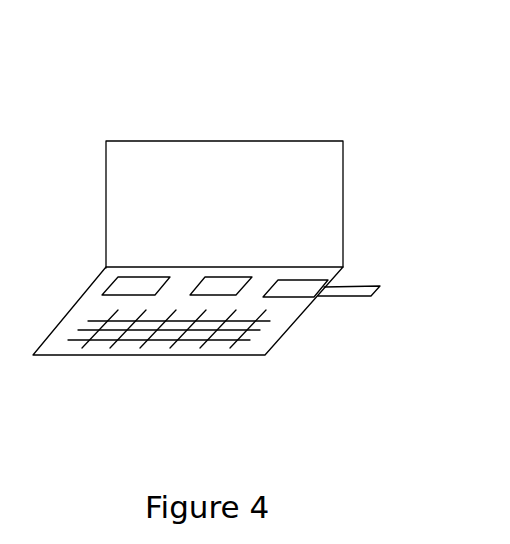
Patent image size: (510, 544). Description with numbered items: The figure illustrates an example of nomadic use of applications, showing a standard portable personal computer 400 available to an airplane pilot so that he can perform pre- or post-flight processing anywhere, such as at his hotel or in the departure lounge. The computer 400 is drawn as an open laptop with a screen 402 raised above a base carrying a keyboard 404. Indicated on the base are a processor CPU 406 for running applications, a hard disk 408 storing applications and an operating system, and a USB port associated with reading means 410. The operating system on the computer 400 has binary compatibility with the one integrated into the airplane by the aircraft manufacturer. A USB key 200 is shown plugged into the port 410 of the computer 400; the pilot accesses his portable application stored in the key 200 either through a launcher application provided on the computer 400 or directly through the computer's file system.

The portable personal computer 400 is at (141, 125).
The screen 402 is at (218, 168).
The keyboard 404 is at (155, 335).
The processor CPU 406 is at (127, 290).
The hard disk 408 is at (220, 285).
The USB port associated with reading means 410 is at (288, 285).
The USB key 200 is at (350, 297).